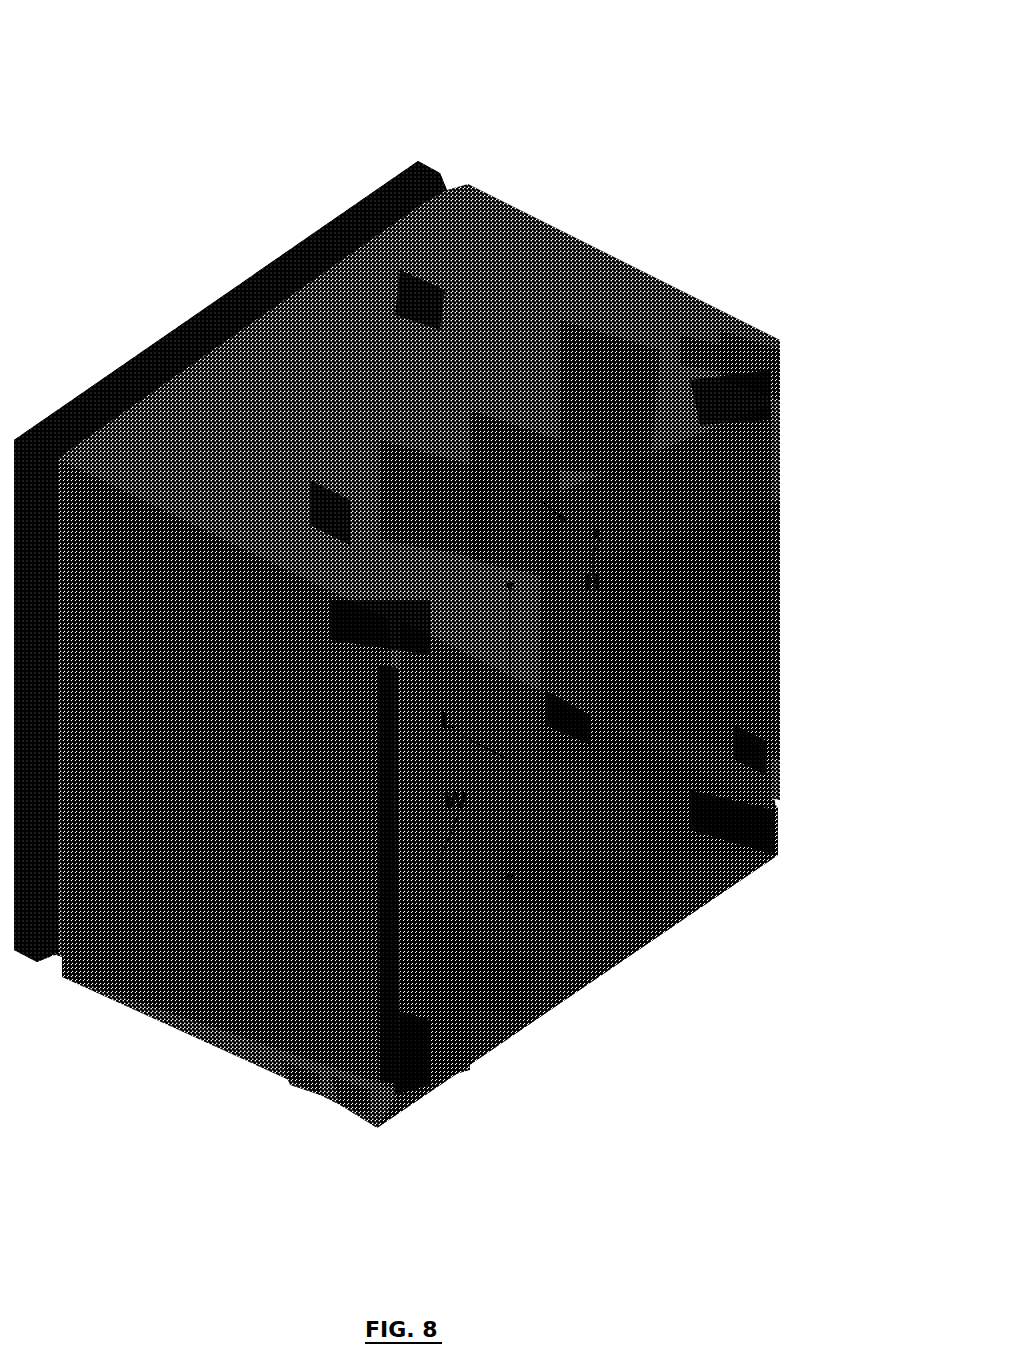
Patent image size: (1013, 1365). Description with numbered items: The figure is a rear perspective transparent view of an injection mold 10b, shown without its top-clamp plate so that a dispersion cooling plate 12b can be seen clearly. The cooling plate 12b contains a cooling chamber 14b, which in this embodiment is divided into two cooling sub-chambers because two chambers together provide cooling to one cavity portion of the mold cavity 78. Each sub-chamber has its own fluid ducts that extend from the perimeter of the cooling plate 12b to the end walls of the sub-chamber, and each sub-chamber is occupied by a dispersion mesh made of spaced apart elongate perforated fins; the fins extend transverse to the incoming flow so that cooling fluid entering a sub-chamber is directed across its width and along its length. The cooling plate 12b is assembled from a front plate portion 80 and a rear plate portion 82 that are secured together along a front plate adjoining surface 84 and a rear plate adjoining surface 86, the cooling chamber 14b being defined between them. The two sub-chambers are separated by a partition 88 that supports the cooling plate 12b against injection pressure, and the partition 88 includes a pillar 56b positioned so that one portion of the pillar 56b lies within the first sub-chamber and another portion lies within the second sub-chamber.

The mold 10b is at (119, 84).
The dispersion cooling plate 12b is at (780, 686).
The cooling chamber 14b is at (588, 840).
The pillar 56b is at (547, 690).
The mold cavity 78 is at (537, 567).
The front plate portion 80 is at (300, 1085).
The rear plate portion 82 is at (362, 1080).
The front plate adjoining surface 84 is at (733, 338).
The rear plate adjoining surface 86 is at (690, 340).
The partition 88 is at (532, 872).